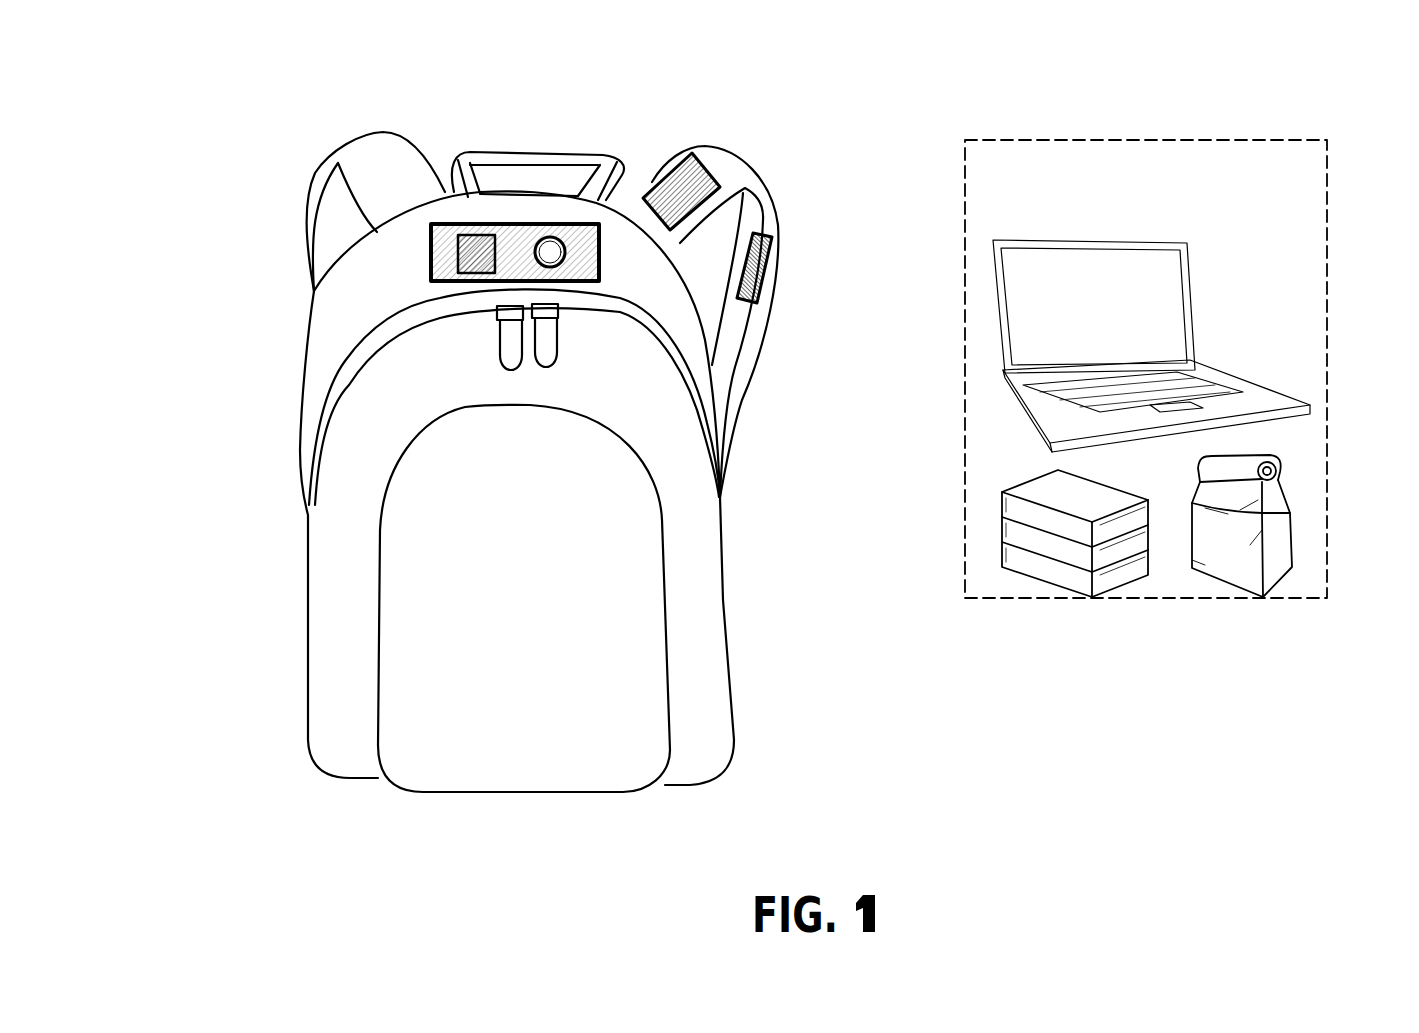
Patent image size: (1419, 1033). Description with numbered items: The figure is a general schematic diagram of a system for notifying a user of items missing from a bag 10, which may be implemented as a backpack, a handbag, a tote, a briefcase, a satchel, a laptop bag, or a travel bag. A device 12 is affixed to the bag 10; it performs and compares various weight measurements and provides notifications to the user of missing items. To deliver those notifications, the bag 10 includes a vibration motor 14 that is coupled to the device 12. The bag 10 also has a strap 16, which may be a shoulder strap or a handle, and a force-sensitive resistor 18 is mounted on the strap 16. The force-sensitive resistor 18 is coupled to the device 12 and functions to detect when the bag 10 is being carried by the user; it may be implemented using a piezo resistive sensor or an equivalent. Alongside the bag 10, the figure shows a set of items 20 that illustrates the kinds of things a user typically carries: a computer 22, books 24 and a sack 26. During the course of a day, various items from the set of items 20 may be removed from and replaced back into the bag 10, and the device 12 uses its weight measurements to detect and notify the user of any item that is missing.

The bag 10 is at (304, 387).
The device 12 is at (431, 246).
The vibration motor 14 is at (660, 172).
The strap 16 is at (760, 183).
The force-sensitive resistor 18 is at (766, 271).
The set of items 20 is at (1283, 140).
The computer 22 is at (1193, 330).
The books 24 is at (1078, 582).
The sack 26 is at (1293, 542).